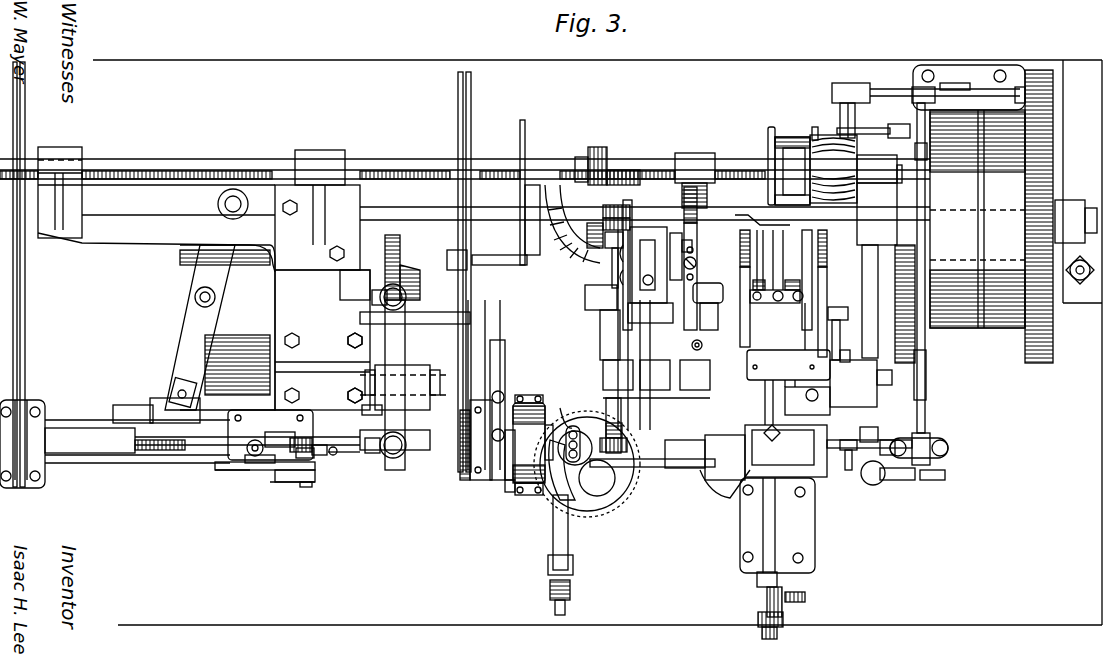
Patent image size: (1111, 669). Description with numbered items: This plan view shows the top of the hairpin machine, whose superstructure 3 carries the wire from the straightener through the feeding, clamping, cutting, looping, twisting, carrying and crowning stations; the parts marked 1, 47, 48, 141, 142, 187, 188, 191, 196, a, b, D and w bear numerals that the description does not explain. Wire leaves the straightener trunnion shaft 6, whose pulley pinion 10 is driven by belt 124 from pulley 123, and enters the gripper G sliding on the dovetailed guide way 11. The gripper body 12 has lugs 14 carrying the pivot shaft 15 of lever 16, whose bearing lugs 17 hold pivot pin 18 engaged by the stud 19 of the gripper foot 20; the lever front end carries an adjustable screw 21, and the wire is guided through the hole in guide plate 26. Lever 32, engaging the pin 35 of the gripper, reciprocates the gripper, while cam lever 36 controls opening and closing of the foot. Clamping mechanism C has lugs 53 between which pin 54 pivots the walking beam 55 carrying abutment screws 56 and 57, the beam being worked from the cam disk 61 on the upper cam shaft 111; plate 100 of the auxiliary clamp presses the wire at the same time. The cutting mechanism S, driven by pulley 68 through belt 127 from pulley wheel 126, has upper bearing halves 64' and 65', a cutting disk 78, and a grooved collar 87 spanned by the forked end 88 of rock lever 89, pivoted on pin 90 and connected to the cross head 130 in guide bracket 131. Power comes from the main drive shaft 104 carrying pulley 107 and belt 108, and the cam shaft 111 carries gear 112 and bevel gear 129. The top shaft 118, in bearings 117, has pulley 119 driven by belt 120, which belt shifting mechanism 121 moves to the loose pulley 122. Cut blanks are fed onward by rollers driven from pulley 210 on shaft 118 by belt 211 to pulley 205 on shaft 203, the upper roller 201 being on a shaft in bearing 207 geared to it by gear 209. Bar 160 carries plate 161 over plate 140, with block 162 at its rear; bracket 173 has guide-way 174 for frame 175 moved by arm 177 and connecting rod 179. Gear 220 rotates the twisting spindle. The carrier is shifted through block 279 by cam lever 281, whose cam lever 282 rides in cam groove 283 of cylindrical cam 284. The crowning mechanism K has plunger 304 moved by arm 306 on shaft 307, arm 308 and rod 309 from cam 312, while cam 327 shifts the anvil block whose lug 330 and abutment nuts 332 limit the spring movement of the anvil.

The frame 1 is at (597, 342).
The superstructure 3 is at (850, 390).
The trunnion shaft 6 is at (68, 440).
The pulley pinion 10 is at (35, 408).
The dovetailed guide way 11 is at (90, 428).
The gripper body 12 is at (270, 435).
The upstanding lugs 14 is at (295, 482).
The transverse pivot shaft 15 is at (280, 426).
The lever 16 is at (255, 445).
The bearing lugs 17 is at (310, 448).
The pivot pin 18 is at (305, 438).
The vertical stud 19 is at (312, 480).
The gripper foot 20 is at (318, 446).
The vertical screw 21 is at (250, 462).
The guide plate 26 is at (330, 455).
The lever 32 is at (232, 466).
The pin 35 is at (300, 482).
The cam lever 36 is at (176, 462).
The pin 47 is at (345, 438).
The base 48 is at (410, 452).
The lug 53 is at (428, 391).
The pin 54 is at (354, 385).
The walking beam 55 is at (400, 336).
The abutment screw 56 is at (393, 456).
The abutment screw 57 is at (352, 333).
The cam disk 61 is at (400, 256).
The driving pulley 68 is at (462, 470).
The disk section 78 is at (516, 496).
The grooved collar 87 is at (506, 498).
The forked end 88 is at (505, 470).
The rock lever 89 is at (506, 380).
The pin 90 is at (492, 400).
The plate 100 is at (650, 443).
The main drive shaft 104 is at (752, 213).
The driving pulley 107 is at (975, 230).
The belt 108 is at (967, 225).
The upper cam shaft 111 is at (408, 297).
The gear 112 is at (912, 345).
The bearings 117 is at (90, 153).
The shaft 118 is at (664, 158).
The pulley 119 is at (775, 133).
The belt 120 is at (850, 130).
The belt shifting mechanism 121 is at (890, 92).
The loose pulley 122 is at (838, 168).
The belt pulley 123 is at (30, 141).
The belt 124 is at (25, 330).
The pulley wheel 126 is at (472, 112).
The belt 127 is at (410, 380).
The bevel gear 129 is at (412, 278).
The cross head 130 is at (508, 330).
The guide bracket 131 is at (487, 199).
The plate 140 is at (652, 227).
The slide 141 is at (645, 240).
The base 142 is at (650, 305).
The bar 160 is at (695, 237).
The plate 161 is at (696, 266).
The block 162 is at (694, 251).
The bracket 173 is at (655, 316).
The vertical guide-way 174 is at (700, 470).
The frame 175 is at (615, 340).
The arm 177 is at (600, 368).
The connecting rod 179 is at (605, 312).
The screw 187 is at (711, 349).
The rack 188 is at (704, 260).
The bracket 191 is at (752, 350).
The pawl 196 is at (622, 488).
The upper roller 201 is at (668, 446).
The shaft 203 is at (604, 225).
The belt pulley 205 is at (628, 164).
The bearing 207 is at (605, 262).
The gear 209 is at (574, 224).
The pulley 210 is at (605, 150).
The belt 211 is at (604, 212).
The gear 220 is at (587, 473).
The block 279 is at (160, 400).
The cam lever 281 is at (200, 316).
The cam lever 282 is at (200, 292).
The cam groove 283 is at (212, 358).
The cylindrical cam 284 is at (258, 325).
The plunger 304 is at (777, 525).
The arm 306 is at (790, 410).
The shaft 307 is at (849, 354).
The arm 308 is at (846, 340).
The rod 309 is at (840, 301).
The cam 312 is at (822, 270).
The cam 327 is at (772, 290).
The lug 330 is at (757, 580).
The abutment nuts 332 is at (785, 606).
The hub a is at (597, 478).
The link b is at (725, 487).
The clamping mechanism C is at (400, 350).
The pivot D is at (574, 425).
The gripper G is at (265, 478).
The crowning mechanism K is at (846, 455).
The cutting mechanism S is at (529, 439).
The rod w is at (247, 436).
The upper bearing half 64' is at (471, 454).
The upper bearing half 65' is at (535, 445).